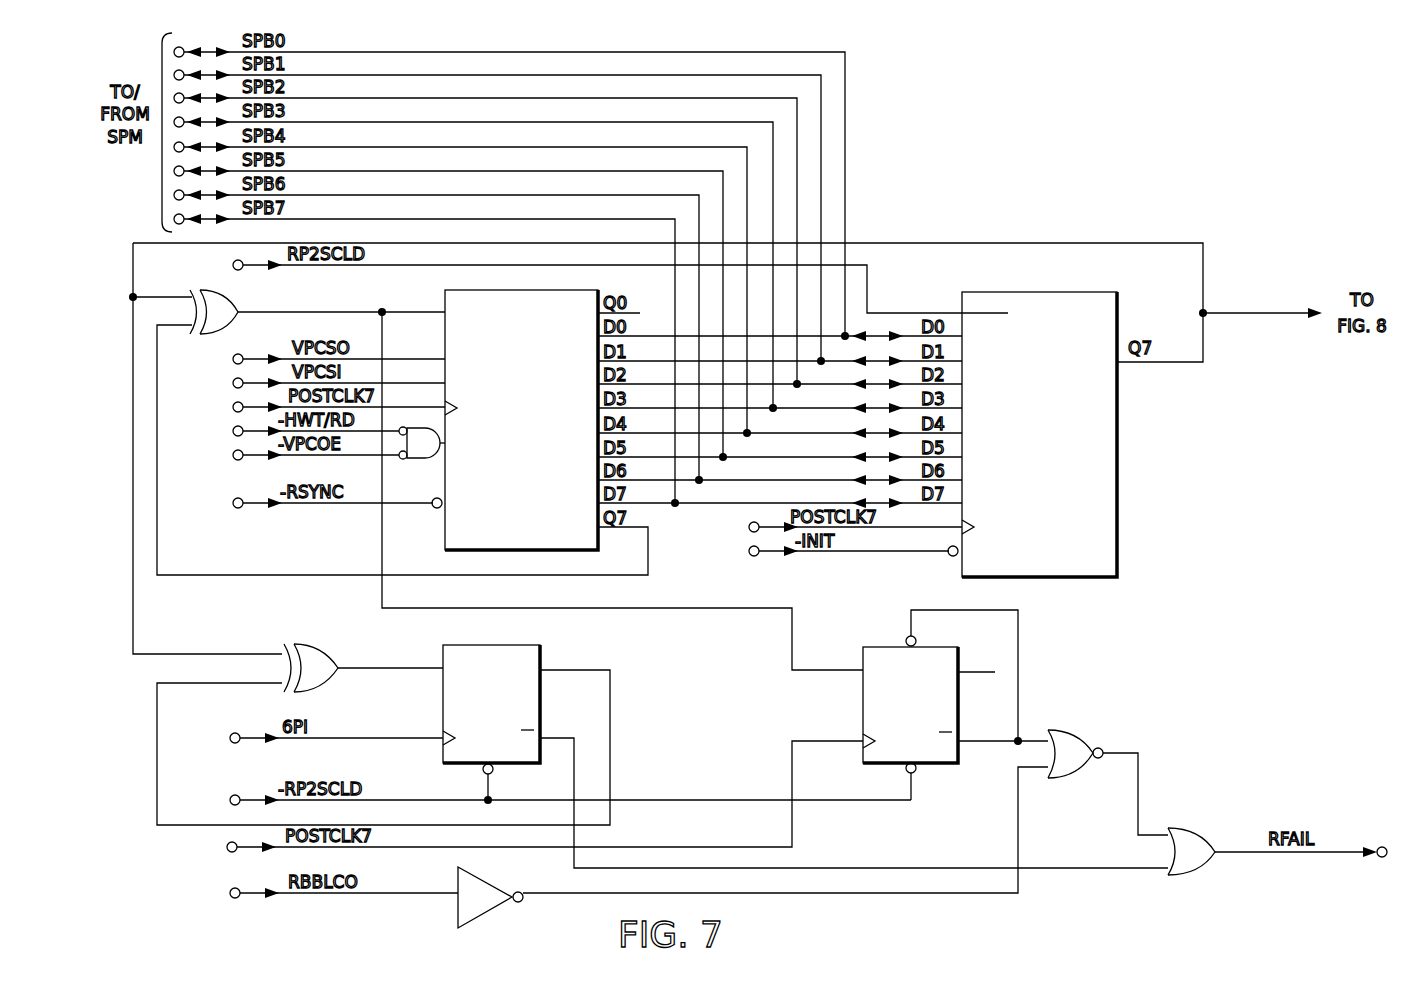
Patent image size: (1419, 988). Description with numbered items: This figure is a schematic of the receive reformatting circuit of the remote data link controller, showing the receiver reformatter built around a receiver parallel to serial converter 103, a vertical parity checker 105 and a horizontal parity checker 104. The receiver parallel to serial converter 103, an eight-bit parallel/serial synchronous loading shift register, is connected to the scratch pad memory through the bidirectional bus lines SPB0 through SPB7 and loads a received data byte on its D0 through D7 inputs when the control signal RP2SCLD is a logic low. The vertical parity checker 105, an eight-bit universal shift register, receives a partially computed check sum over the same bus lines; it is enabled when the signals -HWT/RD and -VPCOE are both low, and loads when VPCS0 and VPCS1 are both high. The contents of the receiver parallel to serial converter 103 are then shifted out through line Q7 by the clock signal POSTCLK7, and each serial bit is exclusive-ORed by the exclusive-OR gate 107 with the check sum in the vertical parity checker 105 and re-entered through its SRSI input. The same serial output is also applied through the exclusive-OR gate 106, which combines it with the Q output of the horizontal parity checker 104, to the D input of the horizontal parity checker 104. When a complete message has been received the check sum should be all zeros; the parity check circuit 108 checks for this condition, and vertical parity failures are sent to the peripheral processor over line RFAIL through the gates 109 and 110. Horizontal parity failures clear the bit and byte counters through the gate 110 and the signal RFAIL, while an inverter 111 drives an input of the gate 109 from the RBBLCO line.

The receiver parallel to serial converter 103 is at (1105, 292).
The horizontal parity checker 104 is at (535, 645).
The vertical parity checker 105 is at (440, 544).
The exclusive-OR gate 106 is at (328, 648).
The exclusive-OR gate 107 is at (240, 297).
The parity check circuit 108 is at (936, 767).
The gate 109 is at (1080, 732).
The gate 110 is at (1190, 828).
The inverter 111 is at (495, 881).